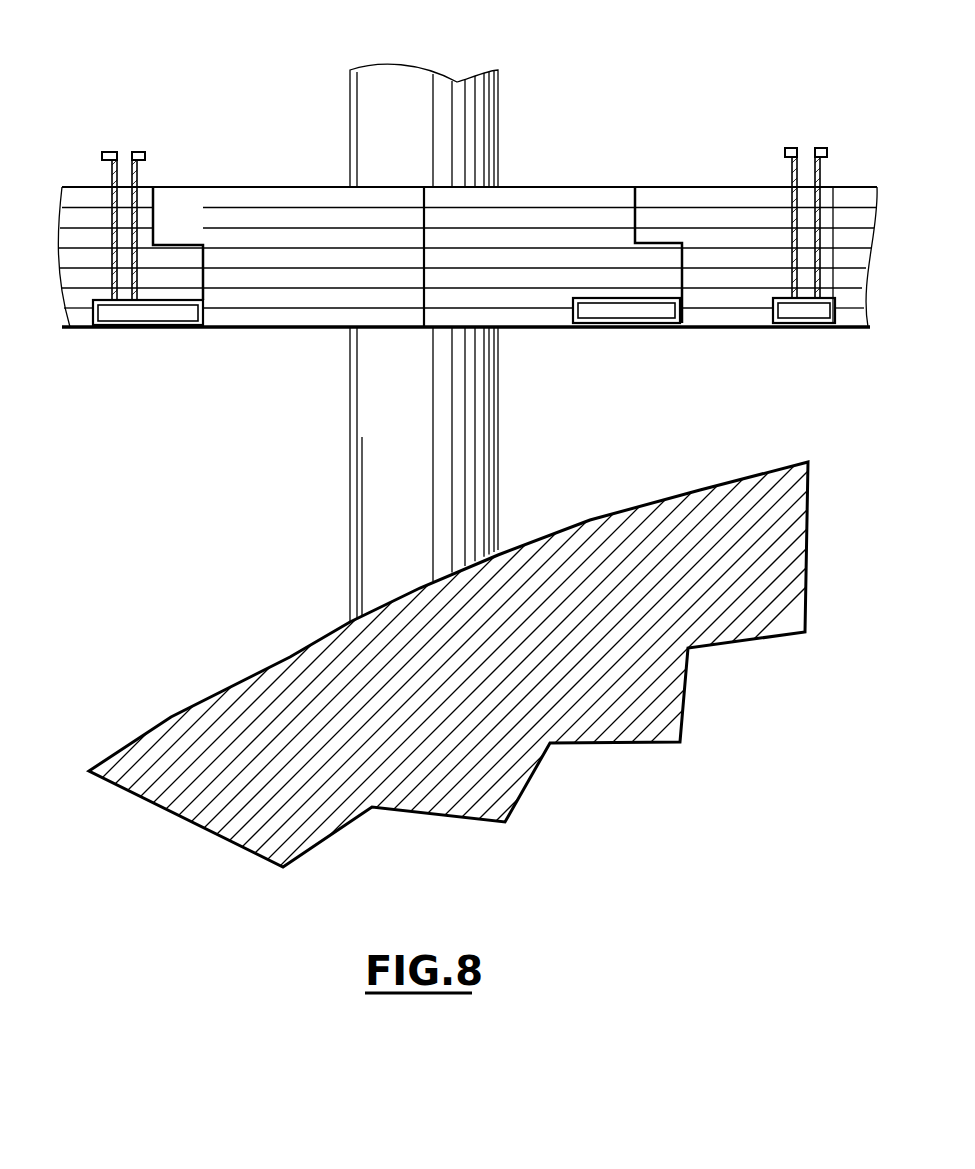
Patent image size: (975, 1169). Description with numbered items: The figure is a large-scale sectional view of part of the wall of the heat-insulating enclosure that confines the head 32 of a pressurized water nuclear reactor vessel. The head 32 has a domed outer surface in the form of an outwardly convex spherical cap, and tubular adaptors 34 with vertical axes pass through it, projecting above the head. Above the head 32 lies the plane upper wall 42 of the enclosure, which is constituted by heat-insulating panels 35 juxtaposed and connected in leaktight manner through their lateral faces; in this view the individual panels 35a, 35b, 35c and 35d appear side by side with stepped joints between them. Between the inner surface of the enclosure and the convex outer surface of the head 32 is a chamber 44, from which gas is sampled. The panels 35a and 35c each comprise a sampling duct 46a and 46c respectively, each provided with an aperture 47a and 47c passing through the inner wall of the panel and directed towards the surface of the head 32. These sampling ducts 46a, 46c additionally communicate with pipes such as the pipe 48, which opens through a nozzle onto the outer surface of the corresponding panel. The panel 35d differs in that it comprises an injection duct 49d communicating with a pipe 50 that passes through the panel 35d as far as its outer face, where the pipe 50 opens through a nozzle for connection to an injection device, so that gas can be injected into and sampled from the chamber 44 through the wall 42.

The head 32 is at (169, 717).
The tubular adaptor 34 is at (390, 510).
The heat-insulating panel 35 is at (727, 218).
The panel 35a is at (87, 218).
The panel 35b is at (245, 298).
The panel 35c is at (518, 298).
The panel 35d is at (725, 297).
The plane upper wall 42 is at (322, 342).
The chamber 44 is at (559, 472).
The sampling duct 46a is at (173, 323).
The sampling duct 46c is at (668, 327).
The aperture 47a is at (147, 325).
The aperture 47c is at (620, 325).
The pipe 48 is at (123, 205).
The injection duct 49d is at (808, 327).
The pipe 50 is at (805, 197).